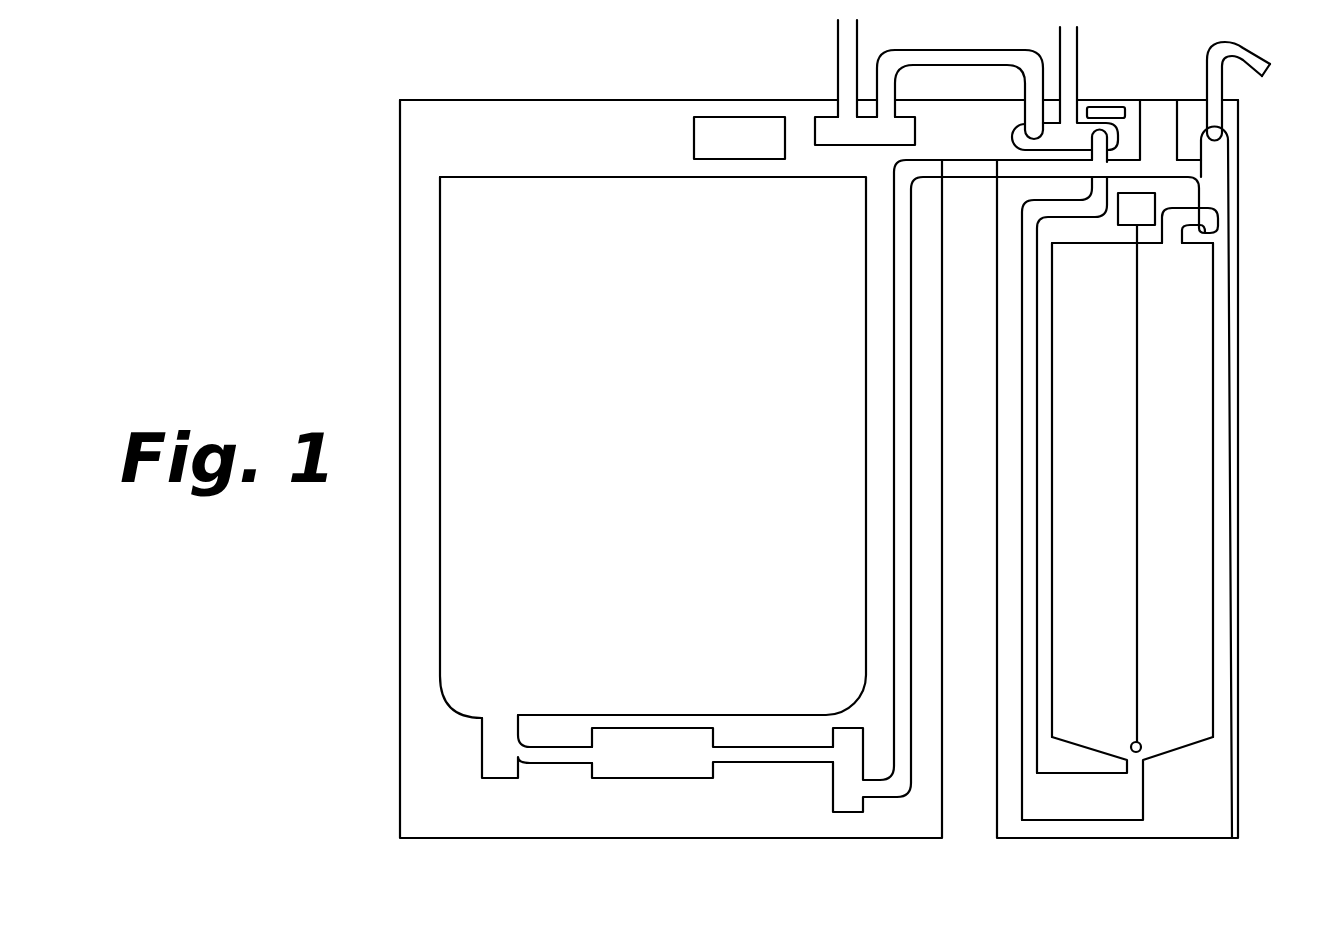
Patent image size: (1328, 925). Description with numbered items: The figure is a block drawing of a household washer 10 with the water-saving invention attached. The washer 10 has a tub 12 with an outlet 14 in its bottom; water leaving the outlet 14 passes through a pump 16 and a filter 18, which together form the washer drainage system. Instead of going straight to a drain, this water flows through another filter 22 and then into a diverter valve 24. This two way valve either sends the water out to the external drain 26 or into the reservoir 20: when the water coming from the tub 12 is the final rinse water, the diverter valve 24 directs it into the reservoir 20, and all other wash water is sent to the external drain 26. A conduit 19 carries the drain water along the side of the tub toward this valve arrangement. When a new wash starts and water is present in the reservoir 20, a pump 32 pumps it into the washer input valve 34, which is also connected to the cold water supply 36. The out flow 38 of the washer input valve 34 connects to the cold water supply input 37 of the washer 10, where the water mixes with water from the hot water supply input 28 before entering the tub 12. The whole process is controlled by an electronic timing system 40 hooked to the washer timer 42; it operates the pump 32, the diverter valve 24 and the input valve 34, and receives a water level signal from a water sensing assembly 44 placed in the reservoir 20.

The washer 10 is at (582, 113).
The tub 12 is at (633, 470).
The outlet 14 is at (492, 748).
The pump 16 is at (647, 768).
The filter 18 is at (845, 778).
The conduit 19 is at (980, 170).
The reservoir 20 is at (1078, 485).
The filter 22 is at (1149, 144).
The diverter valve 24 is at (1218, 163).
The external drain 26 is at (1258, 60).
The hot water supply input 28 is at (843, 38).
The pump 32 is at (1062, 805).
The washer input valve 34 is at (1013, 143).
The cold water supply 36 is at (1080, 38).
The cold water supply input 37 is at (918, 55).
The out flow 38 is at (855, 133).
The electronic timing system 40 is at (1110, 110).
The washer timer 42 is at (727, 148).
The water sensing assembly 44 is at (1137, 212).